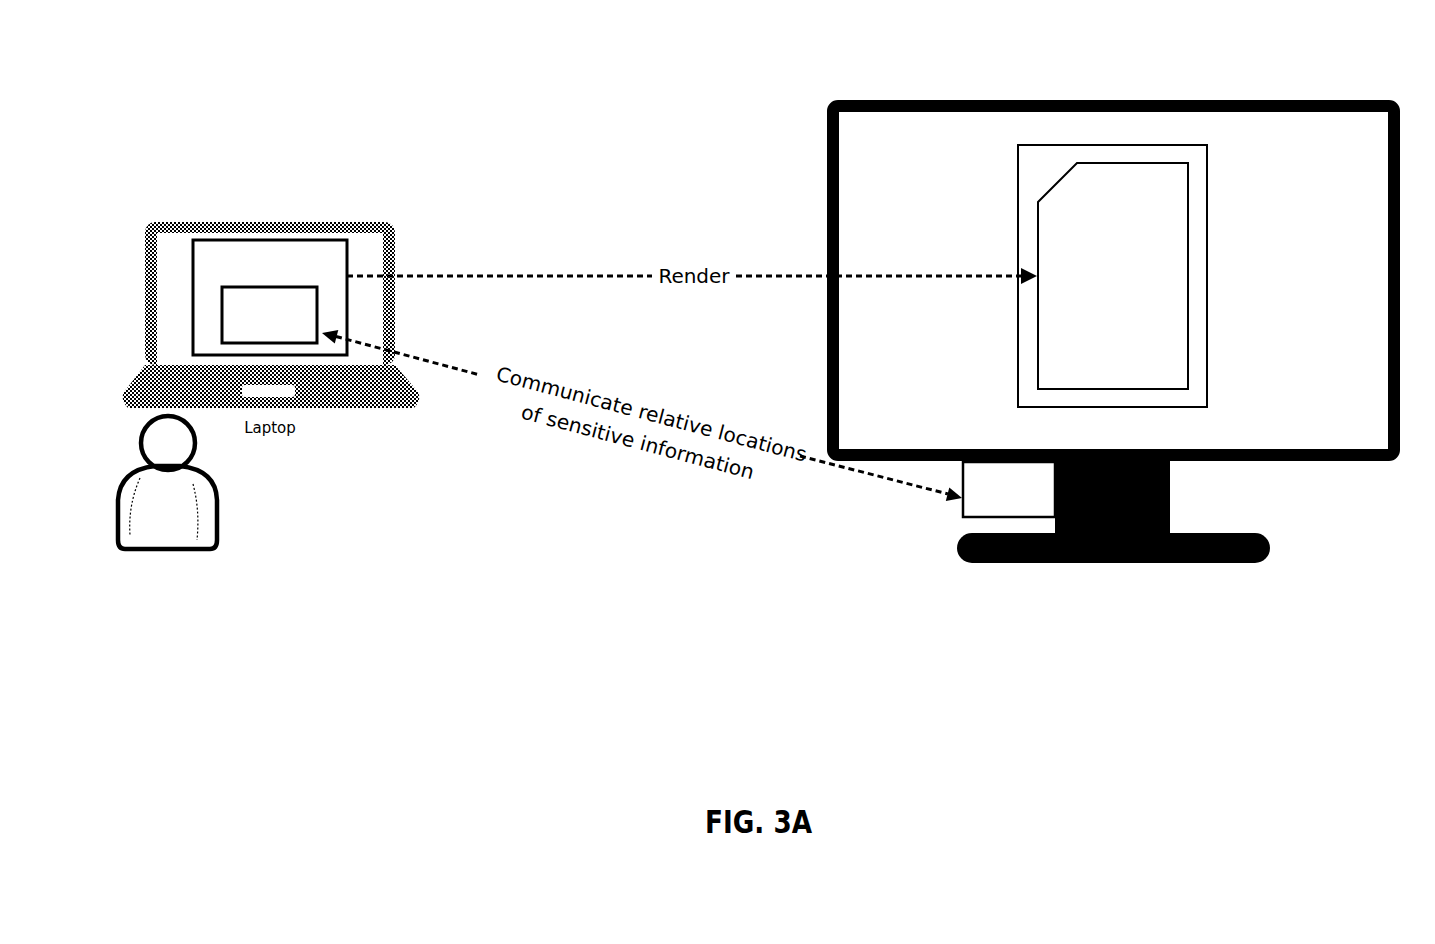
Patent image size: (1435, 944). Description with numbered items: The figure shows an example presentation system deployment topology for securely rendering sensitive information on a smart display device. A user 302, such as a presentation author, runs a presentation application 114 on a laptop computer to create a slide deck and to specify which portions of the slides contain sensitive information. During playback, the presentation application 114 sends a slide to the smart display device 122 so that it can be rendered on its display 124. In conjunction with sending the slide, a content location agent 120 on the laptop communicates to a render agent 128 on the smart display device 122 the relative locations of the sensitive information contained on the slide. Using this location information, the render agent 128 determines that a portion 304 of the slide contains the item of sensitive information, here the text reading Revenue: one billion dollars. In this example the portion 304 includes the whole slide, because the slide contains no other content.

The presentation application 114 is at (251, 274).
The content location agent 120 is at (251, 326).
The smart display device 122 is at (1188, 100).
The display 124 is at (1300, 425).
The render agent 128 is at (990, 501).
The user 302 is at (213, 500).
The portion 304 is at (1207, 183).